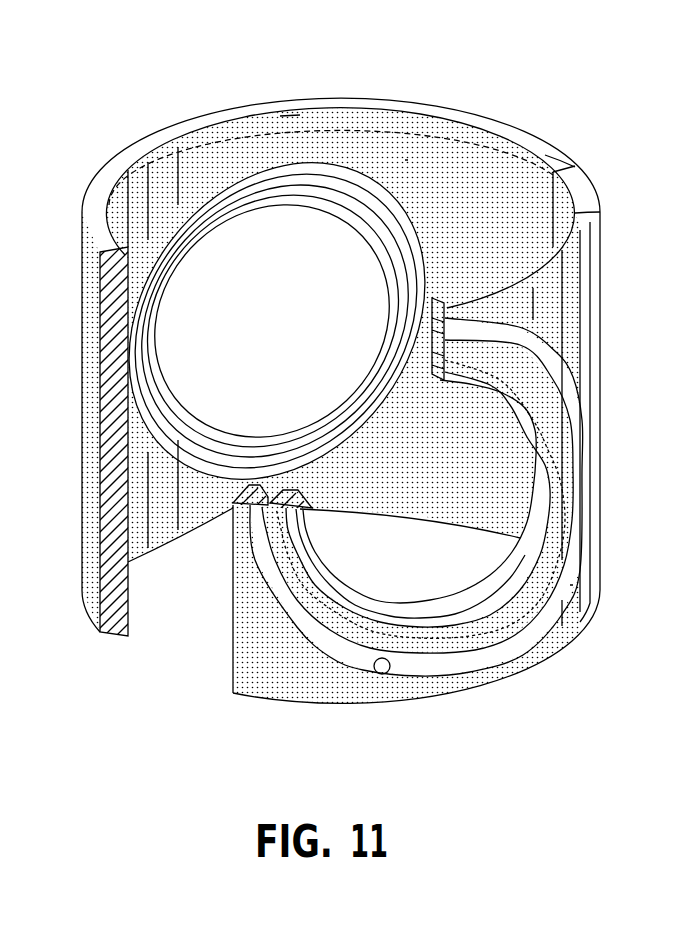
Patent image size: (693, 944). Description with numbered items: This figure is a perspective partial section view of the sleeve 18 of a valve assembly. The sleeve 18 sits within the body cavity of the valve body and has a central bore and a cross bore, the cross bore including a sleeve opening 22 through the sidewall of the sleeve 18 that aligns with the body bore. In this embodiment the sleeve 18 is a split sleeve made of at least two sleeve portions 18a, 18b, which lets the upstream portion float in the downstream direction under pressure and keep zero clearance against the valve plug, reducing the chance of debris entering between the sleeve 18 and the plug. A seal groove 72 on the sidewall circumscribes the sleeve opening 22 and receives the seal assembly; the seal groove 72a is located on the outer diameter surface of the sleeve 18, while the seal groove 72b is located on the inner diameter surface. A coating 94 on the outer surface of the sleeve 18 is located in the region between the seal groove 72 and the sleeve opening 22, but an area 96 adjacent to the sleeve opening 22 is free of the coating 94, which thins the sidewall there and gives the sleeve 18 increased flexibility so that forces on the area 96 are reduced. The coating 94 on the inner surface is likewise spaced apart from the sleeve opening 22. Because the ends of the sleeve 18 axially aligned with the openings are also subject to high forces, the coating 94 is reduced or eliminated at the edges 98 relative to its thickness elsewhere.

The sleeve 18 is at (568, 310).
The sleeve portion 18a is at (545, 155).
The sleeve portion 18b is at (585, 203).
The sleeve opening 22 is at (348, 380).
The seal groove 72 is at (480, 650).
The seal groove 72a is at (392, 670).
The seal groove 72b is at (183, 462).
The coating 94 is at (408, 163).
The area 96 is at (555, 490).
The edge 98 is at (290, 126).